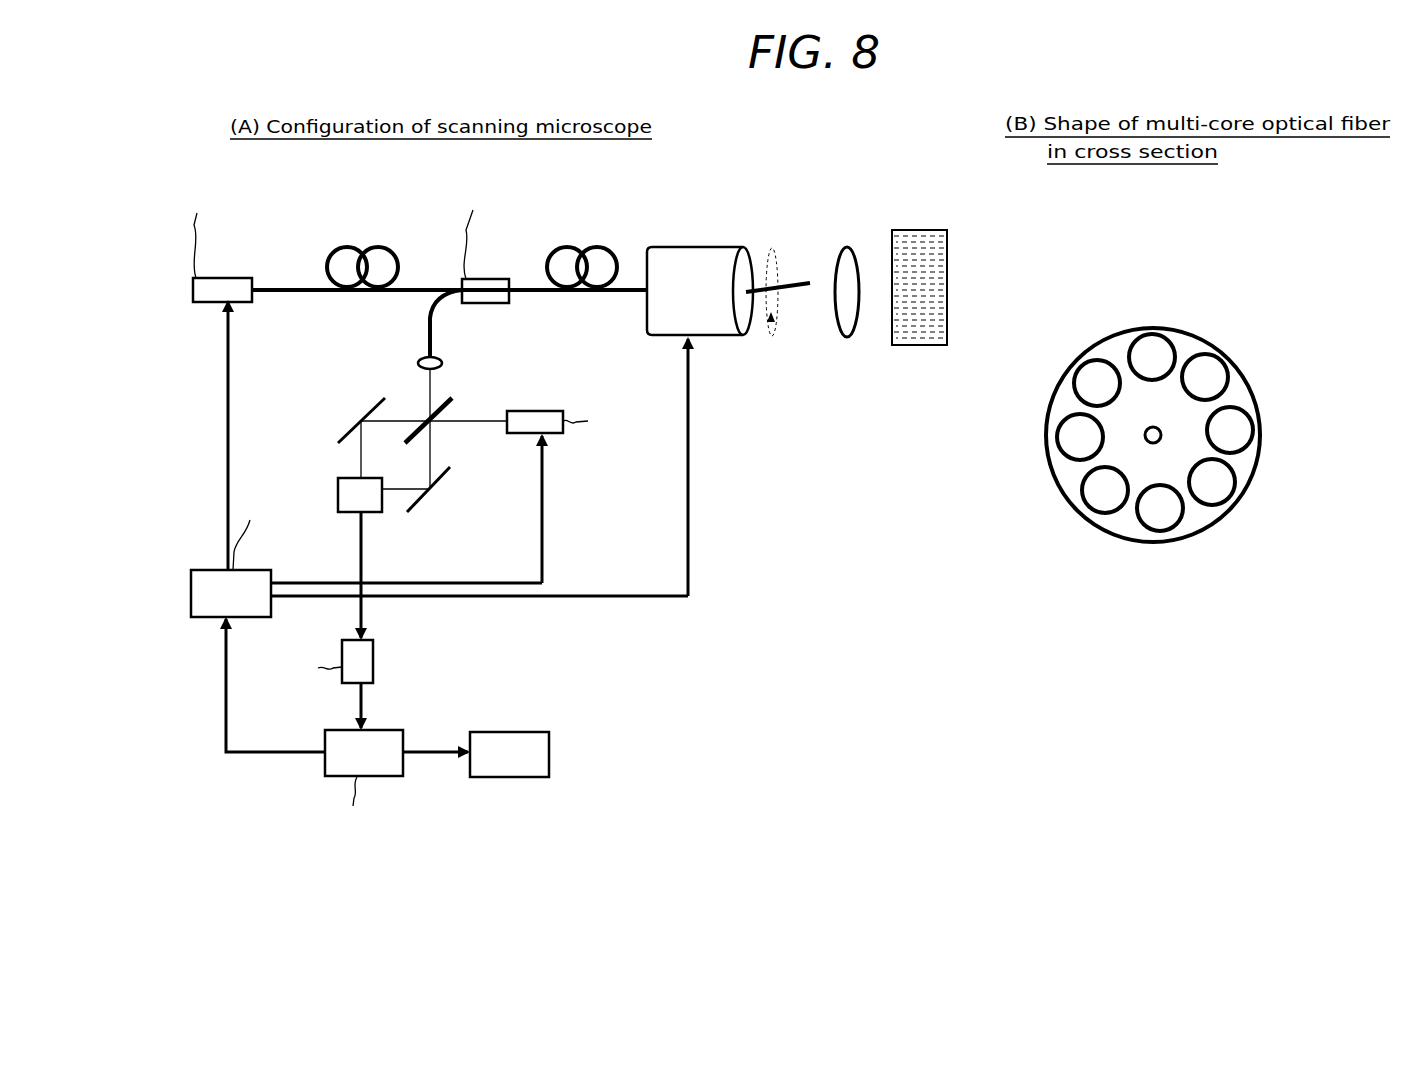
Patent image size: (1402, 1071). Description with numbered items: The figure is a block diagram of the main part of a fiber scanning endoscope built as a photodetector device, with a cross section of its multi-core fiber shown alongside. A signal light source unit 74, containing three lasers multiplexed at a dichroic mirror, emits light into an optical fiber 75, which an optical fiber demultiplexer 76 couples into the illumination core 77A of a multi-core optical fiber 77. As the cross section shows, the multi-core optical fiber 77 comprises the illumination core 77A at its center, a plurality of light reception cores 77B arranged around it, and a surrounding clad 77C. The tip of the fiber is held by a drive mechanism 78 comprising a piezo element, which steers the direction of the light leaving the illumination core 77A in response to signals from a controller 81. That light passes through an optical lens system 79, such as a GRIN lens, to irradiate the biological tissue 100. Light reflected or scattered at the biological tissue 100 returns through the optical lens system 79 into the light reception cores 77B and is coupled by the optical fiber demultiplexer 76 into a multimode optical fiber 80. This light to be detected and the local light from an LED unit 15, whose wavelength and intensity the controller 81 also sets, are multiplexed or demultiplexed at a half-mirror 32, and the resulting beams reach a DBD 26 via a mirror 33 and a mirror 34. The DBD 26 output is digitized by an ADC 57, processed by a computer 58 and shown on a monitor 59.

The signal light source unit 74 is at (205, 278).
The optical fiber 75 is at (363, 243).
The optical fiber demultiplexer 76 is at (475, 278).
The multi-core optical fiber 77 is at (565, 243).
The drive mechanism 78 is at (665, 245).
The optical lens system 79 is at (848, 247).
The biological tissue 100 is at (912, 230).
The multimode optical fiber 80 is at (428, 340).
The mirror 33 is at (360, 410).
The half-mirror 32 is at (440, 405).
The mirror 34 is at (440, 478).
The LED unit 15 is at (534, 411).
The DBD 26 is at (342, 478).
The controller 81 is at (235, 580).
The ADC 57 is at (375, 658).
The computer 58 is at (380, 740).
The monitor 59 is at (505, 736).
The illumination core 77A is at (1155, 430).
The light reception core 77B is at (1159, 508).
The clad 77C is at (1193, 418).